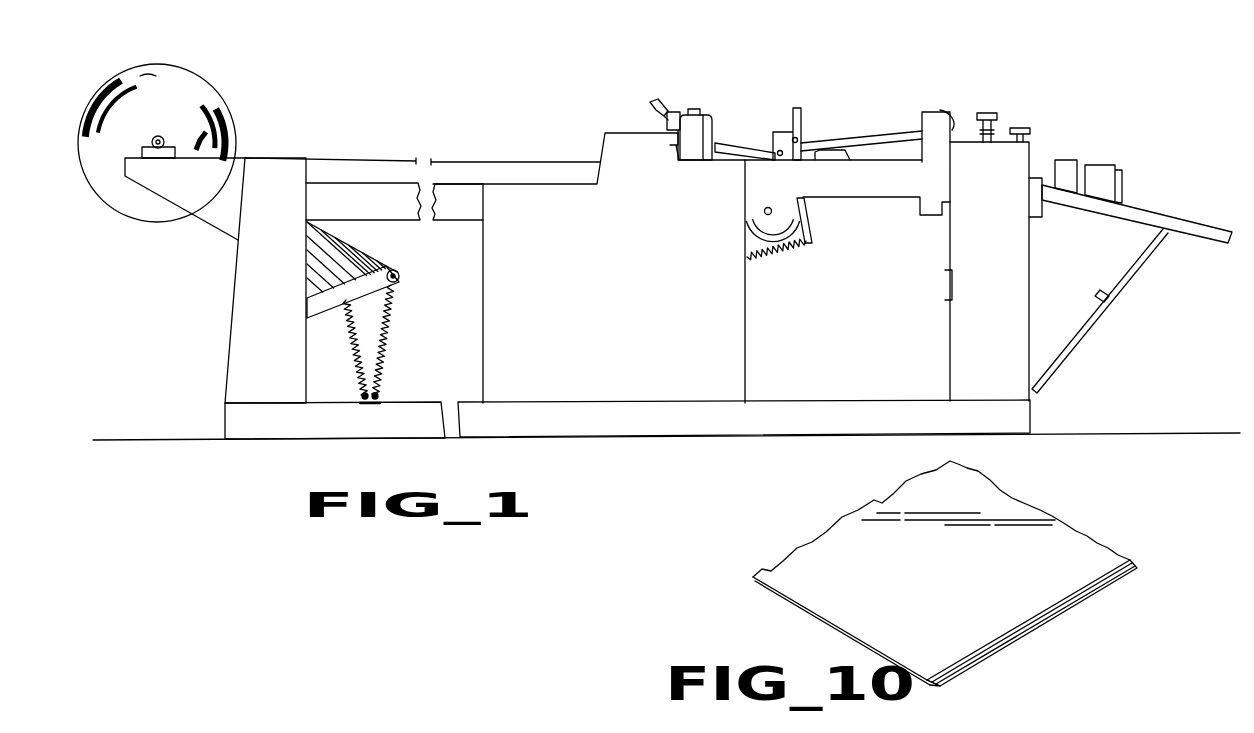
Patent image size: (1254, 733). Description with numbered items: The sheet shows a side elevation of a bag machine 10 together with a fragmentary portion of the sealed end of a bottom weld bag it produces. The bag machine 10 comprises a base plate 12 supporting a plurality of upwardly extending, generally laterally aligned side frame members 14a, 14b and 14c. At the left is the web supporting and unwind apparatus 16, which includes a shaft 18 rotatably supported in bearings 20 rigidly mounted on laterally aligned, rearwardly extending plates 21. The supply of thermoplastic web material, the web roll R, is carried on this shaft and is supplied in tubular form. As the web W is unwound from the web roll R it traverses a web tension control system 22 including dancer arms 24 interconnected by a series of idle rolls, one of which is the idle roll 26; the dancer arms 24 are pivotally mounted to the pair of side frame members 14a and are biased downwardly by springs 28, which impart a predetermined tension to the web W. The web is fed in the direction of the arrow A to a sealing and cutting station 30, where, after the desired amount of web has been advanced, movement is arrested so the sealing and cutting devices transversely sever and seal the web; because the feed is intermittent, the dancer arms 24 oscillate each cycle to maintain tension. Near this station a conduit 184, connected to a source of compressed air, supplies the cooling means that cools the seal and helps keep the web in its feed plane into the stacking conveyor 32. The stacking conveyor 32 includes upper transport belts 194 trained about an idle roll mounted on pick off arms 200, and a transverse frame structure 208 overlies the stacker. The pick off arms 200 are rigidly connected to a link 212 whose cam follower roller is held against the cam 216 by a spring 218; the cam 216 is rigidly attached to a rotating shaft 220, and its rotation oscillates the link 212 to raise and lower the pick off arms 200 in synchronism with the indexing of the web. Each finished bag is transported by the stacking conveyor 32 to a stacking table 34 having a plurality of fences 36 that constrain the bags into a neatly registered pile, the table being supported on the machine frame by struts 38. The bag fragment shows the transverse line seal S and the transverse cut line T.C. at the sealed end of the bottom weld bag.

In FIG. 1, the bag machine 10 is at (346, 76).
In FIG. 1, the base plate 12 is at (228, 421).
In FIG. 1, the side frame member 14a is at (240, 349).
In FIG. 1, the side frame member 14b is at (490, 357).
In FIG. 1, the side frame member 14c is at (951, 259).
In FIG. 1, the web supporting and unwind apparatus 16 is at (237, 107).
In FIG. 1, the shaft 18 is at (154, 140).
In FIG. 1, the bearings 20 is at (167, 149).
In FIG. 1, the rearwardly extending plates 21 is at (215, 222).
In FIG. 1, the web tension control system 22 is at (403, 282).
In FIG. 1, the dancer arms 24 is at (307, 309).
In FIG. 1, the idle roll 26 is at (400, 275).
In FIG. 1, the springs 28 is at (380, 352).
In FIG. 1, the sealing and cutting station 30 is at (707, 112).
In FIG. 1, the stacking conveyor 32 is at (863, 128).
In FIG. 1, the stacking table 34 is at (1155, 215).
In FIG. 1, the fences 36 is at (1102, 174).
In FIG. 1, the struts 38 is at (1097, 302).
In FIG. 1, the conduit 184 is at (651, 104).
In FIG. 1, the upper transport belts 194 is at (817, 148).
In FIG. 1, the pick off arms 200 is at (750, 130).
In FIG. 1, the frame structure 208 is at (808, 96).
In FIG. 1, the link 212 is at (806, 214).
In FIG. 1, the cam 216 is at (752, 238).
In FIG. 1, the spring 218 is at (760, 253).
In FIG. 1, the shaft 220 is at (763, 210).
In FIG. 1, the web roll R is at (148, 76).
In FIG. 1, the web W is at (338, 162).
In FIG. 10, the web W is at (877, 505).
In FIG. 1, the arrow A is at (508, 146).
In FIG. 10, the transverse line seal S is at (1088, 583).
In FIG. 10, the transverse cut line T.C. is at (1012, 643).